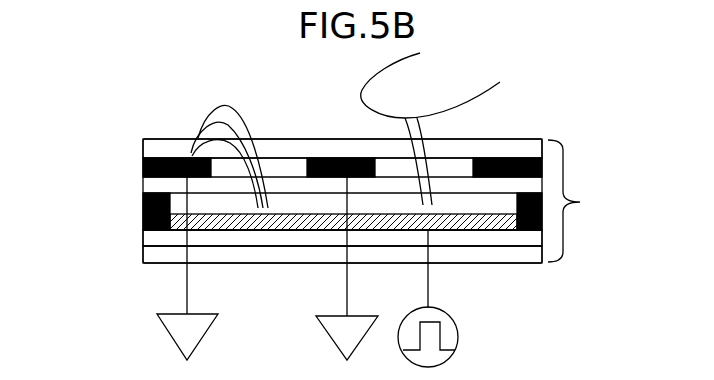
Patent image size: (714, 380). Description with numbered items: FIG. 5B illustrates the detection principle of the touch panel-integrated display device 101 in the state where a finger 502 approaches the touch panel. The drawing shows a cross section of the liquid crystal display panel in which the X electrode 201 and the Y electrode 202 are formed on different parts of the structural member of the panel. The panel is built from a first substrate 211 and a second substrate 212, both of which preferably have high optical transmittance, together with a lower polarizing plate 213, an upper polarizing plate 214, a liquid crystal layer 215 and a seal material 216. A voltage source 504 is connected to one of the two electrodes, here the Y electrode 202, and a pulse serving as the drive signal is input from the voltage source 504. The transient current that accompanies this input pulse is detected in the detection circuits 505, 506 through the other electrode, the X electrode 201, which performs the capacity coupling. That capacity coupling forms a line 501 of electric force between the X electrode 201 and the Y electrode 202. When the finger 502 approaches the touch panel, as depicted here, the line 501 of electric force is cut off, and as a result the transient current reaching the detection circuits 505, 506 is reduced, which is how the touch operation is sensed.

The display device 101 is at (386, 201).
The X electrode 201 is at (142, 158).
The Y electrode 202 is at (452, 230).
The first substrate 211 is at (510, 237).
The second substrate 212 is at (268, 172).
The lower polarizing plate 213 is at (228, 258).
The upper polarizing plate 214 is at (513, 148).
The liquid crystal layer 215 is at (186, 232).
The seal material 216 is at (142, 217).
The line of electric force 501 is at (423, 137).
The finger 502 is at (443, 75).
The voltage source 504 is at (458, 298).
The detection circuit 505 is at (320, 268).
The detection circuit 506 is at (168, 268).